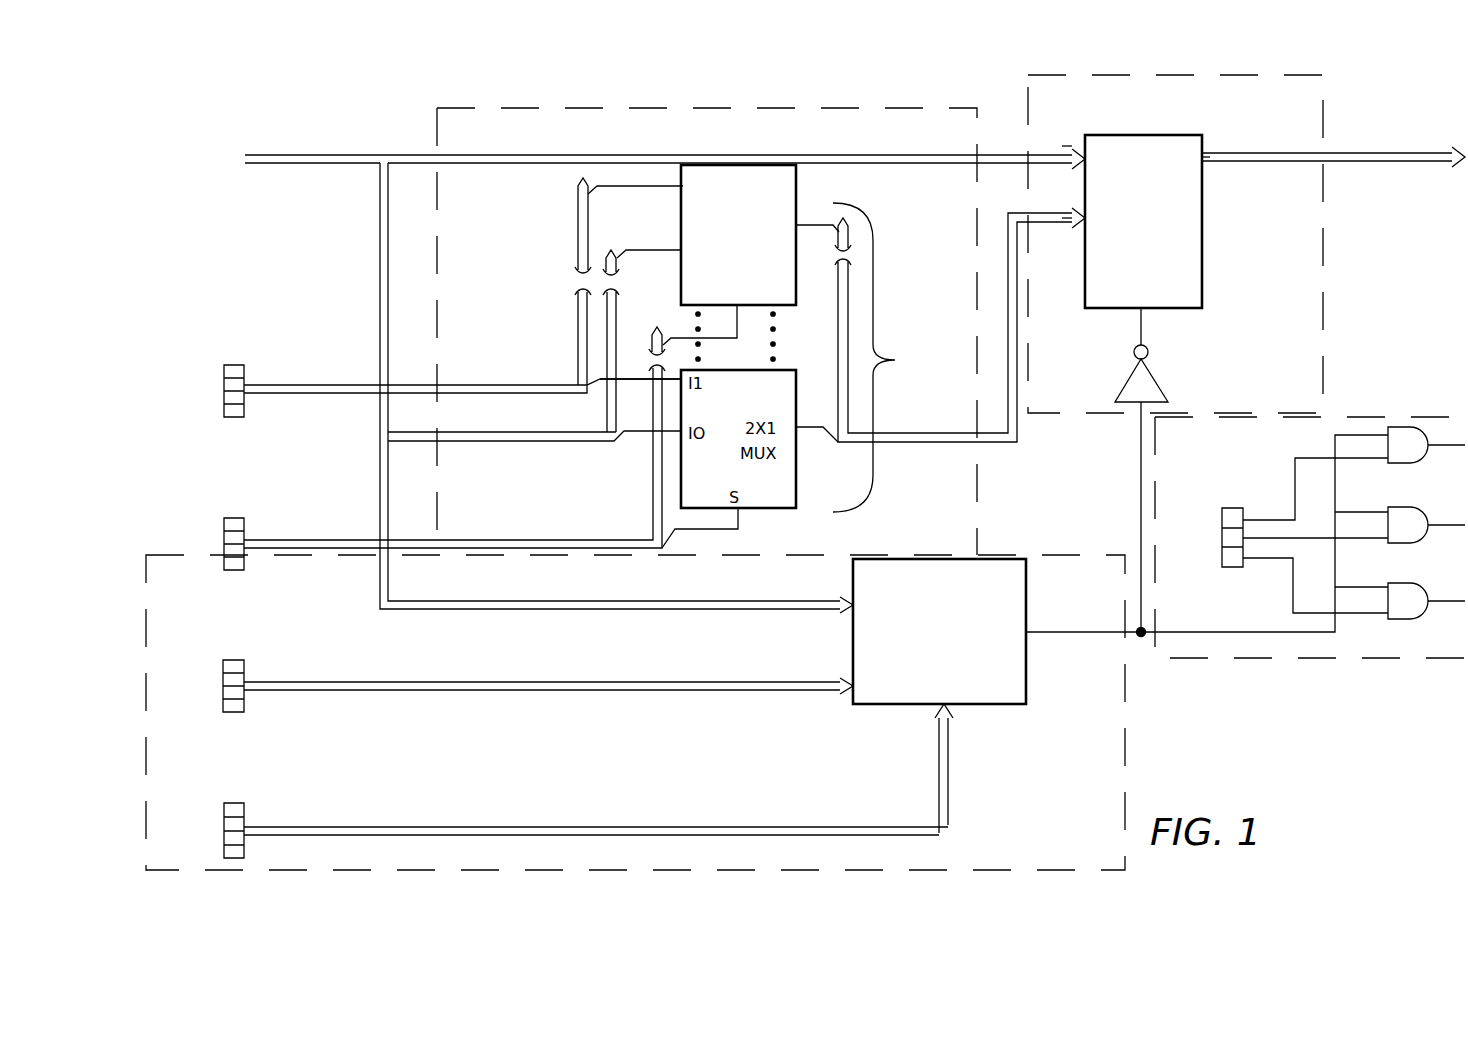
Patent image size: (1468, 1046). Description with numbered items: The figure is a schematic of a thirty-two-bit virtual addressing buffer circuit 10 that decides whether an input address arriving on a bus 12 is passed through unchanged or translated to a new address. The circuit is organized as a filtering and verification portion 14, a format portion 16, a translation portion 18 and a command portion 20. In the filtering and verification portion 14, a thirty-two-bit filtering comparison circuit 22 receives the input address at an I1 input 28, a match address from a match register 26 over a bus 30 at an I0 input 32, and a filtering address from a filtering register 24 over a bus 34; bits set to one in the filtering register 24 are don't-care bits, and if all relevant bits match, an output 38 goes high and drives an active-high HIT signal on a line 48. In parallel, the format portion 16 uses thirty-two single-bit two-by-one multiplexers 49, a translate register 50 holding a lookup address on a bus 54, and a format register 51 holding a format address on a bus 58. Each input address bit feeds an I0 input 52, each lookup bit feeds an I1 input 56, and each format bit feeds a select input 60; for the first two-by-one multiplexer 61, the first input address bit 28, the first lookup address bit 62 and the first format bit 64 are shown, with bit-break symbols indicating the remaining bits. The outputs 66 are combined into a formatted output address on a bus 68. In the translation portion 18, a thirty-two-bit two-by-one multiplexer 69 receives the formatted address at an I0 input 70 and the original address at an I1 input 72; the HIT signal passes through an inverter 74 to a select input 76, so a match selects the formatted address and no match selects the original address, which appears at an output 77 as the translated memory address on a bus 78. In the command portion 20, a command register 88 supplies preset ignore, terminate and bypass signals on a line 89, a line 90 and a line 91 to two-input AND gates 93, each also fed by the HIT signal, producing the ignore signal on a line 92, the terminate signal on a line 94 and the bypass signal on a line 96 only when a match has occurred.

The virtual addressing buffer circuit 10 is at (924, 62).
The bus 12 is at (358, 157).
The filtering and verification portion 14 is at (1127, 745).
The format portion 16 is at (607, 107).
The translation portion 18 is at (1300, 75).
The command portion 20 is at (1425, 660).
The 32-bit filtering comparison circuit 22 is at (977, 558).
The filtering register 24 is at (232, 818).
The match register 26 is at (232, 712).
The I1 input 28 is at (605, 260).
The bus 30 is at (425, 690).
The I0 input 32 is at (850, 680).
The bus 34 is at (480, 827).
The output 38 is at (1028, 640).
The HIT signal line 48 is at (1105, 630).
The single-bit 2×1 multiplexers 49 is at (895, 360).
The translate register 50 is at (232, 365).
The format register 51 is at (232, 518).
The I0 input 52 is at (680, 250).
The bus 54 is at (358, 385).
The I1 input 56 is at (682, 178).
The bus 58 is at (360, 540).
The select input 60 is at (741, 322).
The first 2×1 multiplexer 61 is at (782, 293).
The first lookup address bit LK0 62 is at (578, 184).
The first format bit FO0 64 is at (650, 342).
The output 66 is at (800, 222).
The bus 68 is at (983, 438).
The 32-bit 2×1 multiplexer 69 is at (1202, 175).
The I0 input 70 is at (1083, 222).
The I1 input 72 is at (1083, 152).
The inverter 74 is at (1145, 378).
The select input 76 is at (1143, 325).
The output 77 is at (1202, 140).
The bus 78 is at (1285, 163).
The command register 88 is at (1228, 508).
The line 89 is at (1310, 489).
The line 90 is at (1292, 537).
The line 91 is at (1283, 558).
The line 92 is at (1425, 430).
The two input AND gate 93 is at (1410, 460).
The line 94 is at (1425, 510).
The line 96 is at (1425, 585).